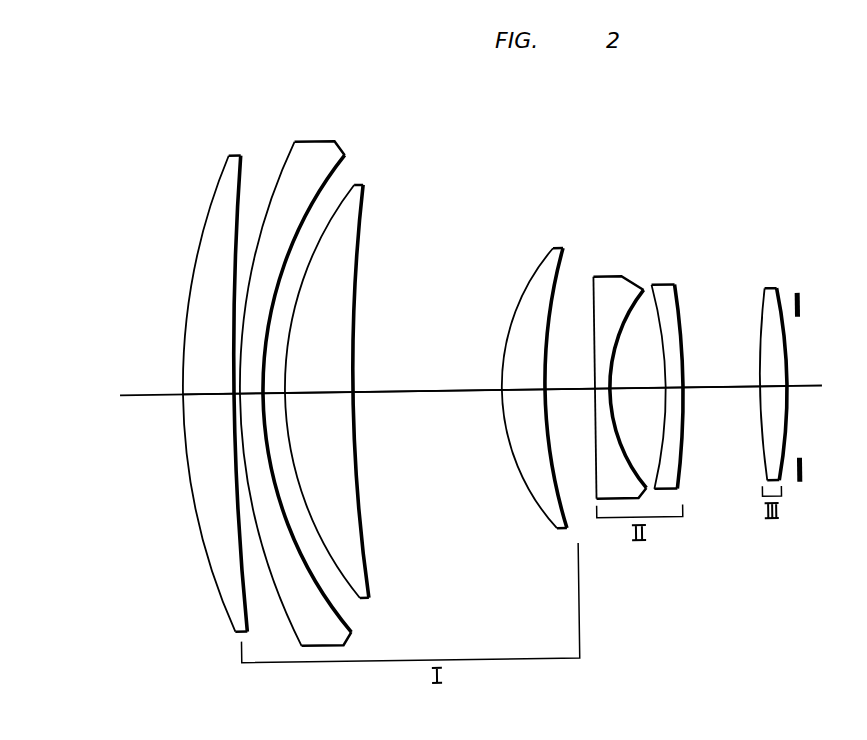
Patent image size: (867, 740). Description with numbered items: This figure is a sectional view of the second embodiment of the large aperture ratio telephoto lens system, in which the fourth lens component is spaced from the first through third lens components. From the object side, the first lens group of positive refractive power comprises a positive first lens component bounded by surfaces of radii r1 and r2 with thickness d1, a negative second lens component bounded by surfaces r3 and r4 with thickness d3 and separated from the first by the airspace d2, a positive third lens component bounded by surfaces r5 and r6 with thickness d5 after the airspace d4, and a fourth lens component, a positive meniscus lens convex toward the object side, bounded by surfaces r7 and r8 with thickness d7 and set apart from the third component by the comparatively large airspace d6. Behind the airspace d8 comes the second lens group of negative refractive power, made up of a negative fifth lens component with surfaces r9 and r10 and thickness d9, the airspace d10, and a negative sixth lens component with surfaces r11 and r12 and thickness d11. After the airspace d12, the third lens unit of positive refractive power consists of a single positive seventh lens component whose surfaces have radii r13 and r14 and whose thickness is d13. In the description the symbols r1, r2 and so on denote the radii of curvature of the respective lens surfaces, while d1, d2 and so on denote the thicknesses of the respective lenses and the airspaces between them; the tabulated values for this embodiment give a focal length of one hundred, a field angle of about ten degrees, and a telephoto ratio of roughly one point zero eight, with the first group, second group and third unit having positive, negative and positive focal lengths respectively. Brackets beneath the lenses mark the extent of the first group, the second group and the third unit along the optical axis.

The radius of curvature of first lens surface r1 is at (218, 179).
The radius of curvature of second lens surface r2 is at (242, 176).
The radius of curvature of third lens surface r3 is at (292, 150).
The radius of curvature of fourth lens surface r4 is at (348, 156).
The radius of curvature of fifth lens surface r5 is at (354, 188).
The radius of curvature of sixth lens surface r6 is at (367, 191).
The radius of curvature of seventh lens surface r7 is at (549, 258).
The radius of curvature of eighth lens surface r8 is at (566, 252).
The radius of curvature of ninth lens surface r9 is at (594, 280).
The radius of curvature of tenth lens surface r10 is at (633, 284).
The radius of curvature of eleventh lens surface r11 is at (661, 286).
The radius of curvature of twelfth lens surface r12 is at (678, 290).
The radius of curvature of thirteenth lens surface r13 is at (765, 305).
The radius of curvature of fourteenth lens surface r14 is at (779, 292).
The thickness of first lens d1 is at (220, 392).
The airspace between first and second lenses d2 is at (233, 389).
The thickness of second lens d3 is at (253, 391).
The airspace between second and third lenses d4 is at (278, 388).
The thickness of third lens d5 is at (305, 394).
The airspace between third and fourth lenses d6 is at (432, 395).
The thickness of fourth lens d7 is at (515, 393).
The airspace between fourth and fifth lenses d8 is at (567, 395).
The thickness of fifth lens d9 is at (602, 391).
The airspace between fifth and sixth lenses d10 is at (643, 395).
The thickness of sixth lens d11 is at (678, 386).
The airspace between sixth and seventh lenses d12 is at (710, 396).
The thickness of seventh lens d13 is at (772, 392).